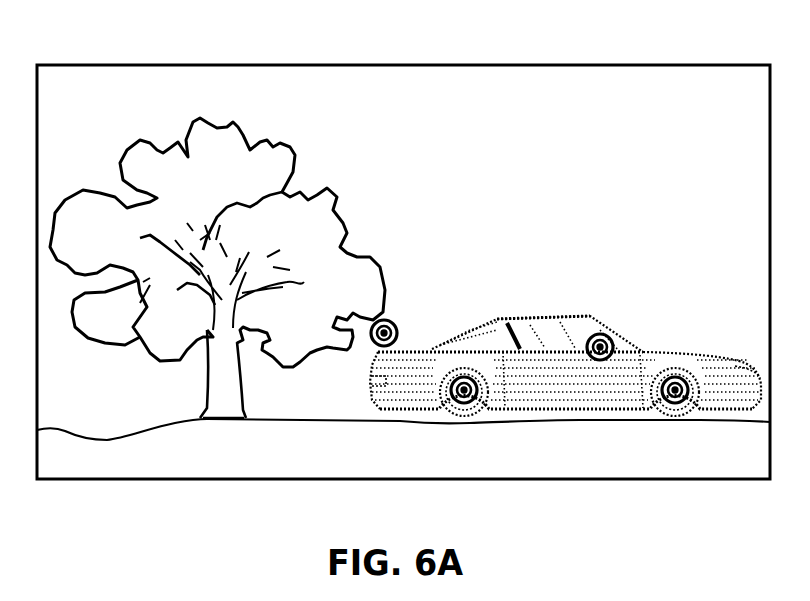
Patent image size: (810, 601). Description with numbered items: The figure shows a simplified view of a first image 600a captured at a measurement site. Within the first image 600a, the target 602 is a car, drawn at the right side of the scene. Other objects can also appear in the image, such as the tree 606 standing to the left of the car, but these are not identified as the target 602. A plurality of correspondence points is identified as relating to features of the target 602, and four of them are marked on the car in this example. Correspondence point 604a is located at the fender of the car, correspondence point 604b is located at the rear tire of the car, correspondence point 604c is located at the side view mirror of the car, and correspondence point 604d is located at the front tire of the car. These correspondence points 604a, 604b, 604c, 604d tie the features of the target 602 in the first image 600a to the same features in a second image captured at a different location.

The first image 600a is at (647, 65).
The target 602 is at (523, 318).
The correspondence point 604a is at (393, 319).
The correspondence point 604b is at (467, 404).
The correspondence point 604c is at (606, 333).
The correspondence point 604d is at (677, 404).
The tree 606 is at (317, 192).